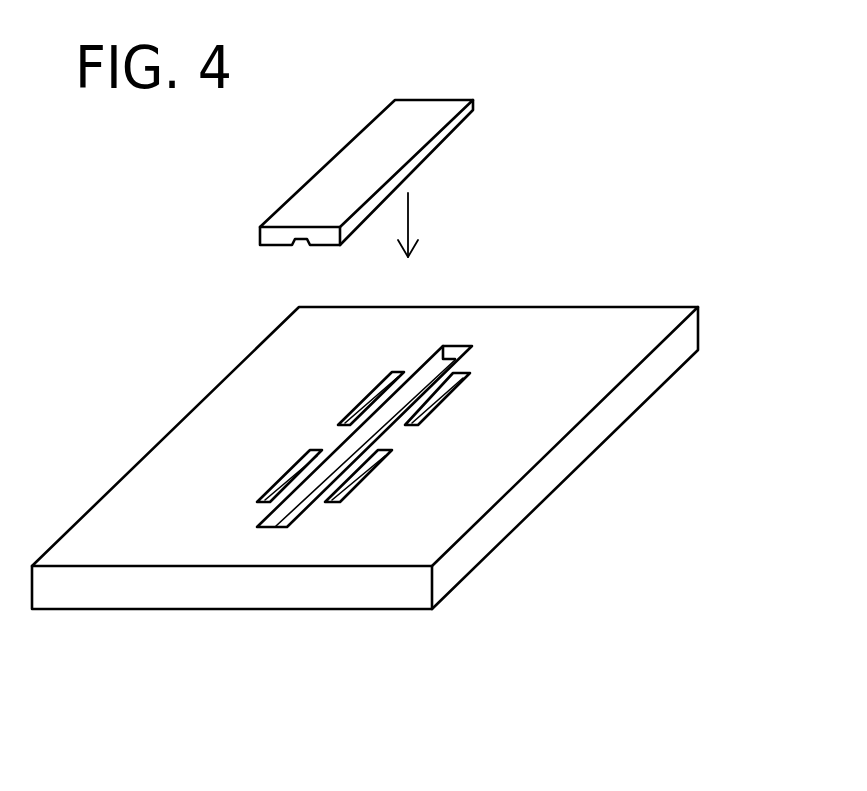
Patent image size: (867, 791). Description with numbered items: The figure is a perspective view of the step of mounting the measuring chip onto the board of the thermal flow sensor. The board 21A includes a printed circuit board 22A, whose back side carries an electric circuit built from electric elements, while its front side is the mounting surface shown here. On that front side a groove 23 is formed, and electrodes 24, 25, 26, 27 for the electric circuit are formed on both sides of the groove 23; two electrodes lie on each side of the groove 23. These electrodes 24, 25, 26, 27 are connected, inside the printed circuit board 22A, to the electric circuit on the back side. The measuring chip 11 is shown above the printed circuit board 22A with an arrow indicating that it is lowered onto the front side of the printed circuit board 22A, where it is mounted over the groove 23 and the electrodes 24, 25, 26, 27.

The measuring chip 11 is at (425, 110).
The board 21A is at (400, 517).
The printed circuit board 22A is at (588, 368).
The groove 23 is at (458, 345).
The electrode 24 is at (447, 393).
The electrode 25 is at (368, 397).
The electrode 26 is at (360, 475).
The electrode 27 is at (283, 478).